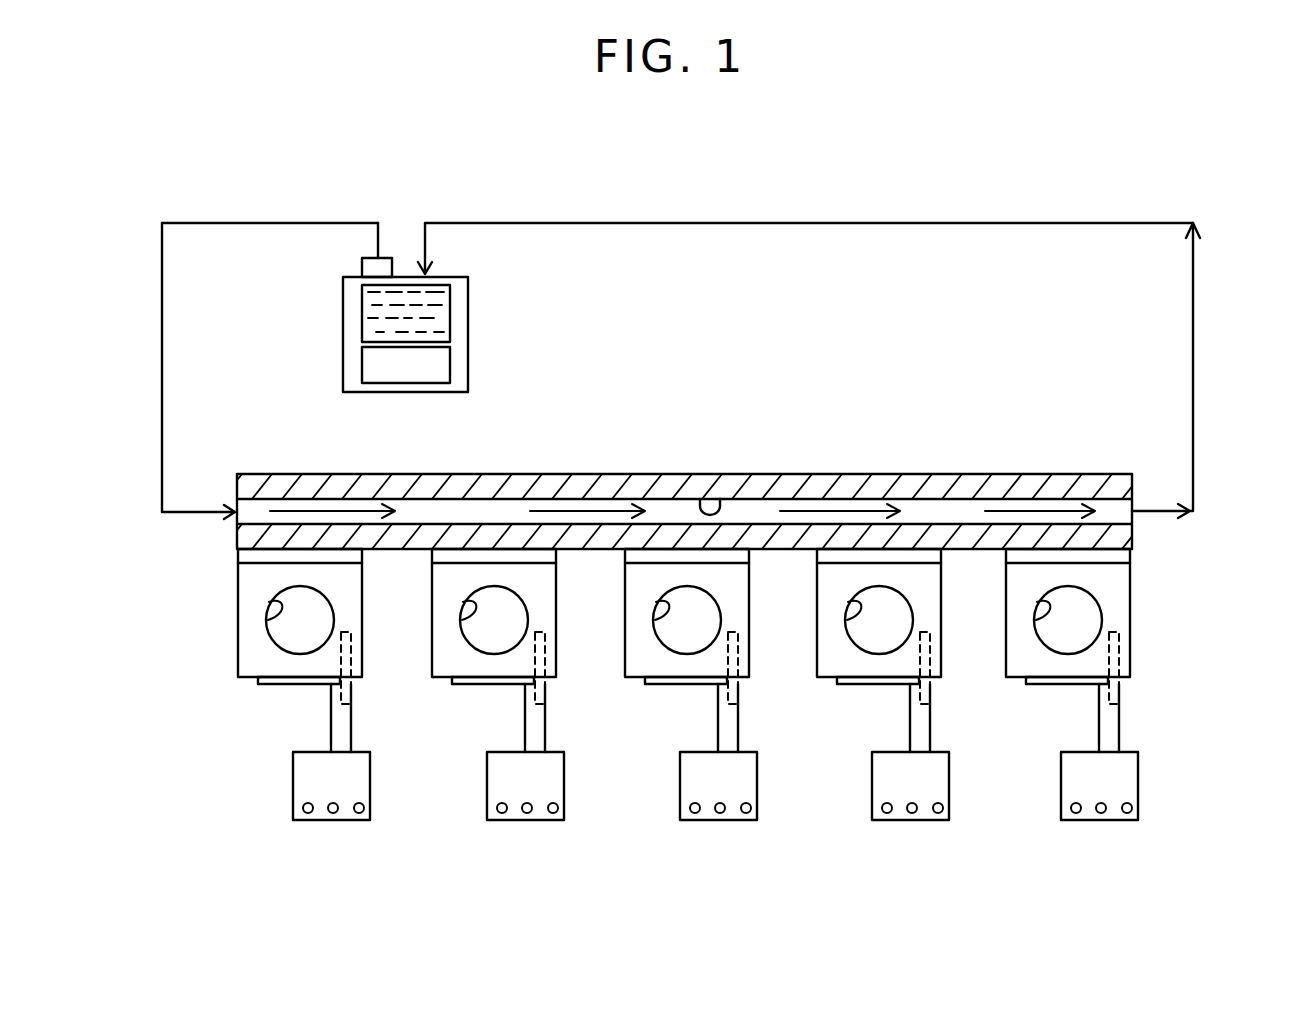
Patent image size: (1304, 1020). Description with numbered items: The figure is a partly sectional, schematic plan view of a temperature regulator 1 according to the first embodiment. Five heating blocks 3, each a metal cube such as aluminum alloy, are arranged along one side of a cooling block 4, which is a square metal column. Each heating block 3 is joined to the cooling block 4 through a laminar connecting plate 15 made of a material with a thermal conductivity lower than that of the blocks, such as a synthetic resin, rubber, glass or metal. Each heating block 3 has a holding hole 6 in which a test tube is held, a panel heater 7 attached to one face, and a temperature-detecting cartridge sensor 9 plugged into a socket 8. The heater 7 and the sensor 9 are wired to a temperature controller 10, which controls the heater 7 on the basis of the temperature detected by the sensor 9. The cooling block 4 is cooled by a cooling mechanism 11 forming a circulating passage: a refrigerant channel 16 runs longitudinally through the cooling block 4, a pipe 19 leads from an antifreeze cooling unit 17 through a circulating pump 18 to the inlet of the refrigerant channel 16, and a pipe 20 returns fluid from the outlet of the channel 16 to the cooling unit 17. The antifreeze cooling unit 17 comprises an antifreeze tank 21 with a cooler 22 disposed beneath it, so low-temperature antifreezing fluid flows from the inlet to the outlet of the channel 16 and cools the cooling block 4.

The temperature regulator 1 is at (684, 129).
The heating block 3 is at (450, 584).
The cooling block 4 is at (860, 474).
The holding hole 6 is at (268, 619).
The panel heater 7 is at (265, 686).
The socket 8 is at (355, 660).
The temperature-detecting cartridge sensor 9 is at (353, 693).
The temperature controller 10 is at (320, 815).
The cooling mechanism 11 is at (930, 213).
The connecting plate 15 is at (238, 556).
The refrigerant channel 16 is at (721, 497).
The antifreeze cooling unit 17 is at (468, 350).
The circulating pump 18 is at (387, 258).
The pipe 19 is at (162, 355).
The pipe 20 is at (1193, 338).
The antifreeze tank 21 is at (443, 312).
The cooler 22 is at (432, 375).